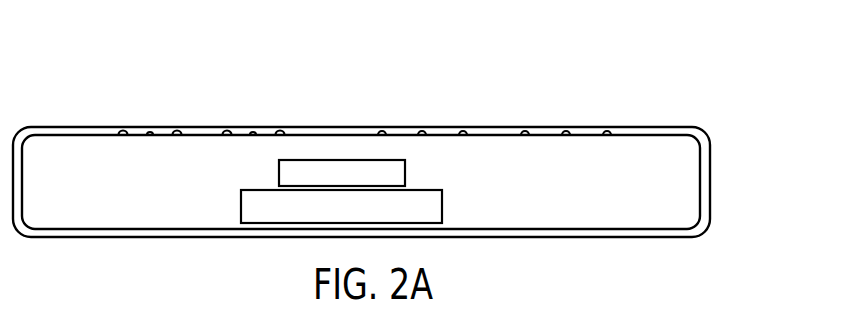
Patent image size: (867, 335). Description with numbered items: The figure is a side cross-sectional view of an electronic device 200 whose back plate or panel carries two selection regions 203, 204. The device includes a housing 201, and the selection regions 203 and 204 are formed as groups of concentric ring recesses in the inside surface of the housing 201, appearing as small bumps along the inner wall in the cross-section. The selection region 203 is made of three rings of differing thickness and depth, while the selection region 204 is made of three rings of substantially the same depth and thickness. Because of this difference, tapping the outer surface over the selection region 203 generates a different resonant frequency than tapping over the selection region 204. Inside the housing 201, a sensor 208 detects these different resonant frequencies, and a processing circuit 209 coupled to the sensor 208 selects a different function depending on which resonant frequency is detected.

The electronic device 200 is at (647, 66).
The housing 201 is at (710, 185).
The selection region 203 is at (285, 118).
The selection region 204 is at (613, 118).
The sensor 208 is at (405, 172).
The processing circuit 209 is at (442, 207).